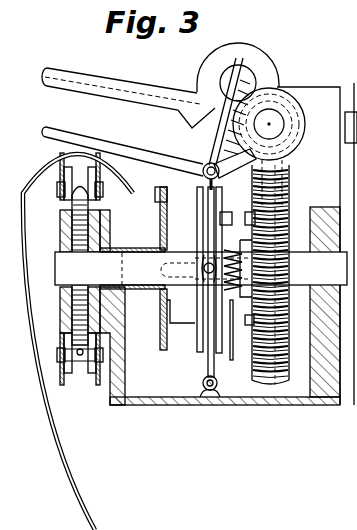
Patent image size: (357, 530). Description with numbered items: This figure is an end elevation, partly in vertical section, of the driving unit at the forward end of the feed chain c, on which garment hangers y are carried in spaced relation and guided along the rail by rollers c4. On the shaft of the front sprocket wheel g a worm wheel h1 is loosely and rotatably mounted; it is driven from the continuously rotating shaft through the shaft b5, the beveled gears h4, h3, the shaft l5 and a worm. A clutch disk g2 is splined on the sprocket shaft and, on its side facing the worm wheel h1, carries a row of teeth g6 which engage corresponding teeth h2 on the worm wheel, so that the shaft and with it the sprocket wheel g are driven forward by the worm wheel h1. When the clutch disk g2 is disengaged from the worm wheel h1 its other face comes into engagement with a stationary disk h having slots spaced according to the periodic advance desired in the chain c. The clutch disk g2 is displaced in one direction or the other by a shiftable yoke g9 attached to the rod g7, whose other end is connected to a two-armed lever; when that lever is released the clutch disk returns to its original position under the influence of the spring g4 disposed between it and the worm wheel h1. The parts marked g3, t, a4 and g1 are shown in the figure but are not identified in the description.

The shaft b5 is at (58, 82).
The rod g7 is at (68, 128).
The beveled gear h4 is at (235, 67).
The beveled gear h3 is at (288, 89).
The shaft l5 is at (274, 123).
The rollers c4 is at (62, 197).
The bushing g3 is at (162, 205).
The row of teeth g6 is at (235, 212).
The teeth h2 is at (274, 210).
The sprocket wheel g is at (78, 253).
The stationary disk h is at (160, 330).
The clutch disk g2 is at (202, 350).
The spring g4 is at (245, 320).
The shiftable yoke g9 is at (210, 362).
The bearing wall t is at (342, 265).
The endless carrier chain c is at (95, 383).
The hanger y is at (75, 453).
The pivot pin a4 is at (210, 393).
The worm wheel h1 is at (260, 383).
The housing g1 is at (325, 397).